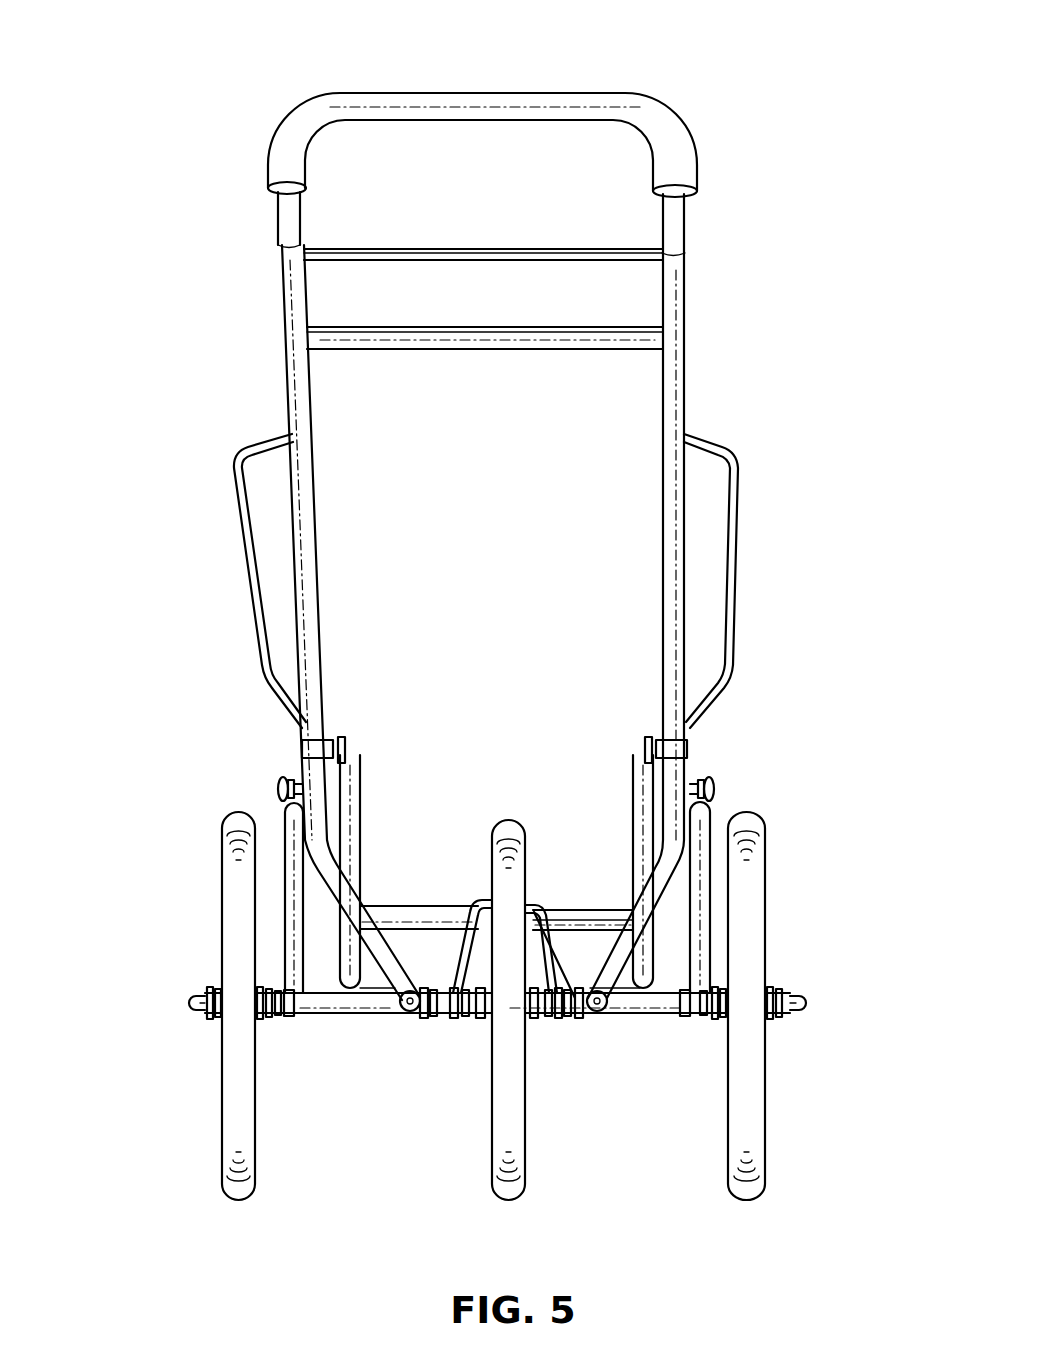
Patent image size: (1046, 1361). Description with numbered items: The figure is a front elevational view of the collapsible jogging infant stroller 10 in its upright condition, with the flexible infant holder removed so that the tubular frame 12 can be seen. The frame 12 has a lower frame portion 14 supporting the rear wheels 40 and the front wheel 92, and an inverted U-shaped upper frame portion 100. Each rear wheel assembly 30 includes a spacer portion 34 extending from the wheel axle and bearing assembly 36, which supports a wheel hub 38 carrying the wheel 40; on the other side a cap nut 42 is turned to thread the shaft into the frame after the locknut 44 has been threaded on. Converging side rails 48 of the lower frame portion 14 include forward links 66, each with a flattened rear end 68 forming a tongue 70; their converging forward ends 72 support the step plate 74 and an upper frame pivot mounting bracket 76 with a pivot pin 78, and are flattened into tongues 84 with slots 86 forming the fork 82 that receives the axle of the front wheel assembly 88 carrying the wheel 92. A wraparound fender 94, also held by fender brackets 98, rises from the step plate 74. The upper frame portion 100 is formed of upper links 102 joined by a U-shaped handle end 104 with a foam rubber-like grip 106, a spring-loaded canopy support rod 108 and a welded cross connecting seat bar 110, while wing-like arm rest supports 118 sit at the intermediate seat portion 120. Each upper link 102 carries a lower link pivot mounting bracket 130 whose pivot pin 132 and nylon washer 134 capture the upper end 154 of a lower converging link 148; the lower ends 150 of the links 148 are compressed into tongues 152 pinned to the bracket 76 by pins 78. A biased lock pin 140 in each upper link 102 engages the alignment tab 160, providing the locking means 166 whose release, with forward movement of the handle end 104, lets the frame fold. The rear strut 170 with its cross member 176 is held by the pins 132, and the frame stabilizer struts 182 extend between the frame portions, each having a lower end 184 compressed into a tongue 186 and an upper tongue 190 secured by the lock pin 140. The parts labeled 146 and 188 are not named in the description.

The collapsible jogging infant stroller 10 is at (258, 121).
The tubular frame 12 is at (283, 213).
The lower frame portion 14 is at (512, 1063).
The rear wheel assembly 30 is at (468, 1006).
The spacer portion 34 is at (495, 1046).
The wheel axle and bearing assembly 36 is at (468, 1006).
The wheel hub 38 is at (222, 890).
The rear wheel 40 is at (468, 1006).
The cap nut 42 is at (197, 1012).
The locknut 44 is at (270, 1015).
The converging side rails 48 is at (512, 1063).
The forward link 66 is at (512, 1063).
The flattened rear end 68 is at (504, 1084).
The tongue 70 is at (310, 1018).
The converging forward end 72 is at (355, 1015).
The step plate 74 is at (504, 1034).
The upper frame pivot mounting bracket 76 is at (504, 1034).
The pivot pin 78 is at (428, 993).
The fork 82 is at (507, 1034).
The tongue 84 is at (458, 1012).
The slot 86 is at (566, 995).
The front wheel assembly 88 is at (510, 976).
The front wheel 92 is at (500, 818).
The wraparound fender 94 is at (470, 905).
The fender bracket 98 is at (550, 925).
The upper frame portion 100 is at (684, 386).
The upper link 102 is at (684, 308).
The U-shaped handle end 104 is at (482, 126).
The foam rubber-like grip 106 is at (428, 105).
The canopy support rod 108 is at (445, 258).
The cross connecting seat bar 110 is at (470, 330).
The wing-like arm rest supports 118 is at (740, 490).
The intermediate seat portion 120 is at (305, 560).
The lower link pivot mounting bracket 130 is at (500, 694).
The pivot pin 132 is at (343, 745).
The nylon washer 134 is at (500, 694).
The biased lock pin 140 is at (496, 858).
The bolt 146 is at (462, 781).
The lower converging link 148 is at (491, 897).
The lower end 150 is at (492, 998).
The tongue 152 is at (418, 930).
The upper end 154 is at (302, 748).
The alignment tab 160 is at (496, 858).
The locking means 166 is at (462, 781).
The rear strut 170 is at (358, 800).
The cross member 176 is at (605, 918).
The frame stabilizer strut 182 is at (491, 897).
The lower end 184 is at (491, 897).
The tongue 186 is at (310, 880).
The washer 188 is at (462, 781).
The tongue 190 is at (280, 806).